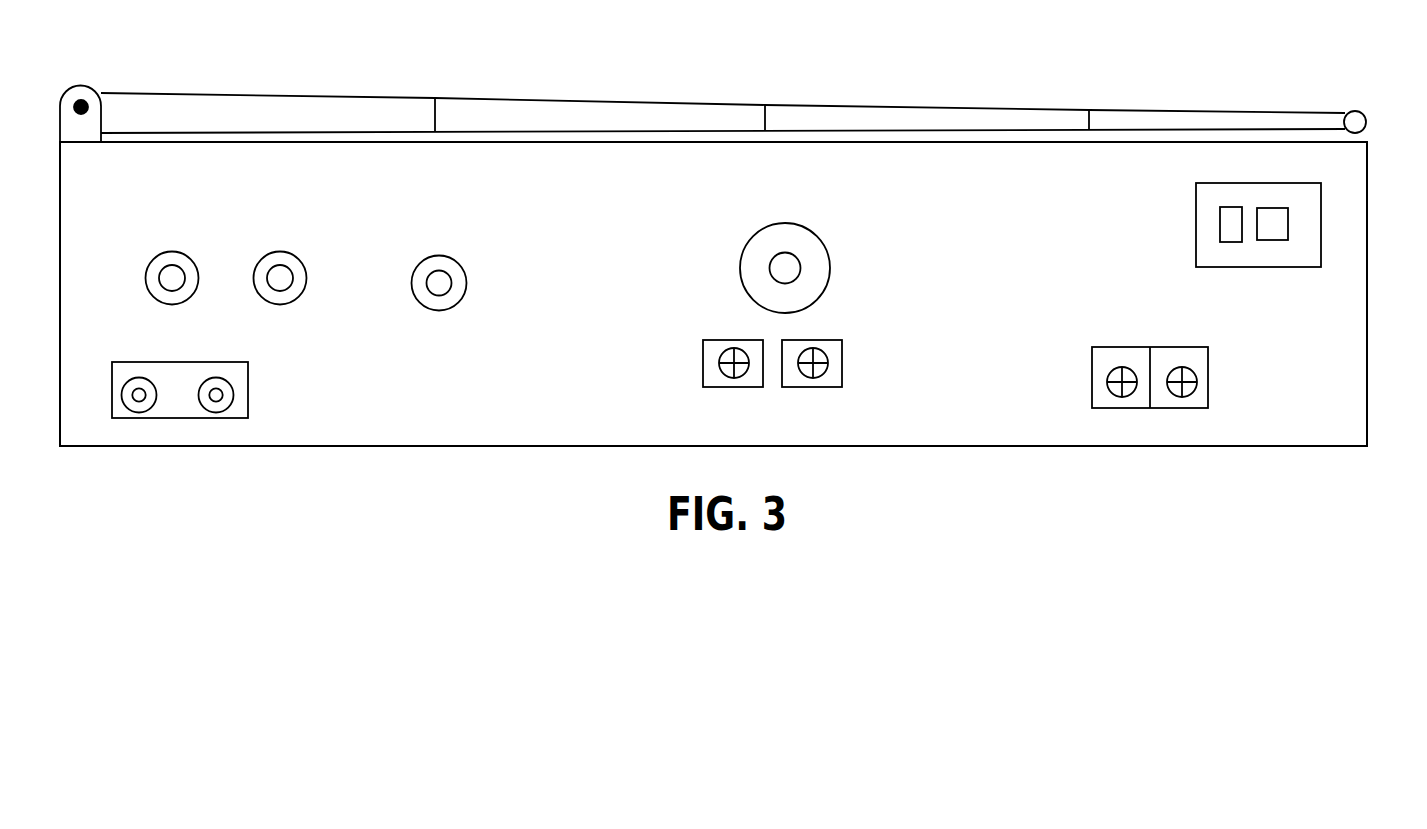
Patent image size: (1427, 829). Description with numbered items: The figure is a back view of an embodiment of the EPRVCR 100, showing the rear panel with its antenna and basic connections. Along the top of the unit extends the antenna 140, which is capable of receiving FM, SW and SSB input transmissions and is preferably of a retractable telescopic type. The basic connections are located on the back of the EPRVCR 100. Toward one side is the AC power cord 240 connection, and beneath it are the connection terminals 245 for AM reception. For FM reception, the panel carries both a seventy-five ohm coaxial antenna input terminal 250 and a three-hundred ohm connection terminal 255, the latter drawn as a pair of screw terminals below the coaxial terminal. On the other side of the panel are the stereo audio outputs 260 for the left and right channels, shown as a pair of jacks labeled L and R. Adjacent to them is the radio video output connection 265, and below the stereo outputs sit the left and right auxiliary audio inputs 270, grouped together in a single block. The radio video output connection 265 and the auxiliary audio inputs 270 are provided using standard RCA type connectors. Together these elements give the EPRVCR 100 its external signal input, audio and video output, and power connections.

The EPRVCR 100 is at (813, 80).
The antenna 140 is at (1366, 122).
The AC power cord 240 is at (1305, 220).
The connection terminals 245 is at (1212, 373).
The 75 ohm coaxial antenna input terminal 250 is at (762, 227).
The 300 ohm connection terminal 255 is at (790, 387).
The stereo audio outputs 260 is at (198, 265).
The radio video output connection 265 is at (467, 281).
The auxiliary audio inputs 270 is at (184, 461).